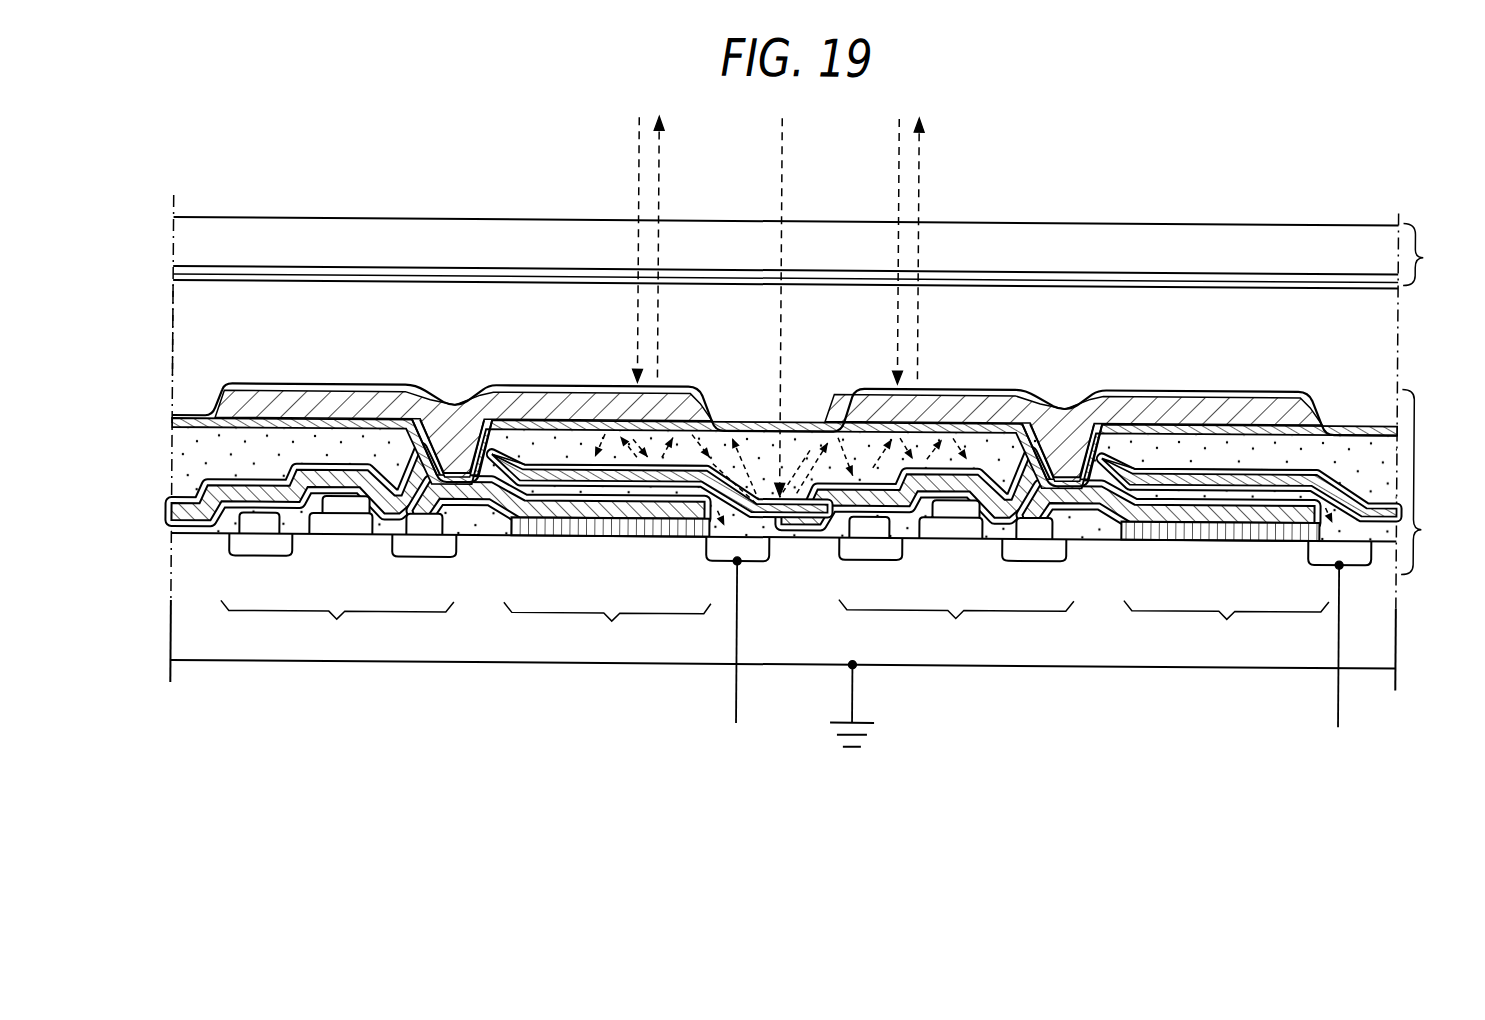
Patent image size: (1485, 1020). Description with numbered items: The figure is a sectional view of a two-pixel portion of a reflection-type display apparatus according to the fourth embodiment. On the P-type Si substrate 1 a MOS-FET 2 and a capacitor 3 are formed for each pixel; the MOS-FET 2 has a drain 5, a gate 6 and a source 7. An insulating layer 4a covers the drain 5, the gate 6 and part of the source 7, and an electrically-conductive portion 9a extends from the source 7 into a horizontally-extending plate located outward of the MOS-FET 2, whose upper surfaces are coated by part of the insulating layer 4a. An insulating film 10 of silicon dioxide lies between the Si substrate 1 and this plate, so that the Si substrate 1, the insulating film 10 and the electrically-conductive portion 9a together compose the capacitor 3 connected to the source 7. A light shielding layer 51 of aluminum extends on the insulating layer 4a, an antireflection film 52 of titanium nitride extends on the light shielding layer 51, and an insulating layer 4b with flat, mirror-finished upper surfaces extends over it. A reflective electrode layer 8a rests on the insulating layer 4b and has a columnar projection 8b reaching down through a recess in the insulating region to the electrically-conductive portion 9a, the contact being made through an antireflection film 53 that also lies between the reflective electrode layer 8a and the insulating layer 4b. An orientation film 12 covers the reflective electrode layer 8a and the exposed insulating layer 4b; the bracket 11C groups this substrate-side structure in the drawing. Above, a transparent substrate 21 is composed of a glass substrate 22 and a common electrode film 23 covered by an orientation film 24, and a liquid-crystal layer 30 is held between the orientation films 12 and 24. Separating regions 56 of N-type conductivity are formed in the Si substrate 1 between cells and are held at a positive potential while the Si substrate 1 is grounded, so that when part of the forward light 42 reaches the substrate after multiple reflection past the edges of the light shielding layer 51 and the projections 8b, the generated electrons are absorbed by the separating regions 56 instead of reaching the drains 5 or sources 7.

The Si substrate 1 is at (497, 657).
The MOS-FET 2 is at (338, 618).
The capacitor 3 is at (613, 618).
The insulating layer 4a is at (801, 540).
The insulating layer 4b is at (745, 430).
The drain 5 is at (262, 556).
The gate 6 is at (341, 533).
The source 7 is at (425, 556).
The reflective electrode layer 8a is at (490, 407).
The columnar projection 8b is at (455, 447).
The electrically-conductive portion 9a is at (495, 533).
The insulating film 10 is at (660, 533).
The active matrix substrate 11C is at (1427, 523).
The orientation film 12 is at (548, 386).
The transparent substrate 21 is at (1427, 247).
The glass substrate 22 is at (968, 238).
The common electrode film 23 is at (1040, 268).
The orientation film 24 is at (1097, 292).
The liquid-crystal layer 30 is at (1368, 349).
The forward light 42 is at (795, 191).
The light shielding layer 51 is at (530, 466).
The antireflection film 52 is at (572, 466).
The antireflection film 53 is at (347, 418).
The separating regions 56 is at (745, 557).